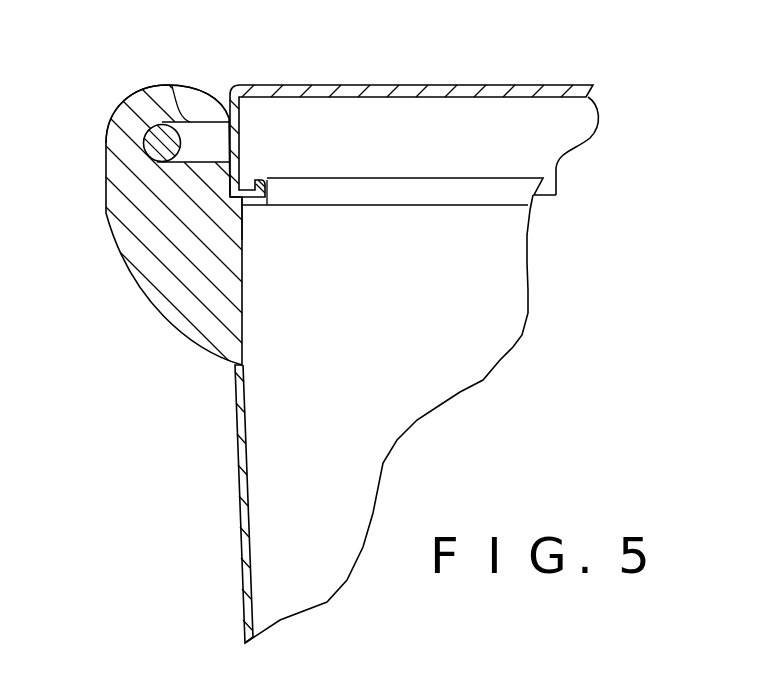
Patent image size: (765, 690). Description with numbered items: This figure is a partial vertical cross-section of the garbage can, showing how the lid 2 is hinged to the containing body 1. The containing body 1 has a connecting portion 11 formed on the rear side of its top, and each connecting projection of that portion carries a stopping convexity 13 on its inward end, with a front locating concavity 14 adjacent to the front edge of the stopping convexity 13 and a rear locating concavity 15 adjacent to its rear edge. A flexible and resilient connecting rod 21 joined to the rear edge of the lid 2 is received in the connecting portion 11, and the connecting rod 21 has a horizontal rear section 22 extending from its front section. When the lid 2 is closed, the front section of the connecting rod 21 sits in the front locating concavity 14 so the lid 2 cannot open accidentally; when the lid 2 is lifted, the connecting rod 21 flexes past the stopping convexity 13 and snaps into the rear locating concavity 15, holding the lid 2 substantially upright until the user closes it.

The containing body 1 is at (493, 313).
The lid 2 is at (474, 86).
The connecting portion 11 is at (155, 296).
The stopping convexity 13 is at (192, 107).
The front locating concavity 14 is at (200, 163).
The rear locating concavity 15 is at (139, 112).
The connecting rod 21 is at (207, 143).
The horizontal rear section 22 is at (153, 145).